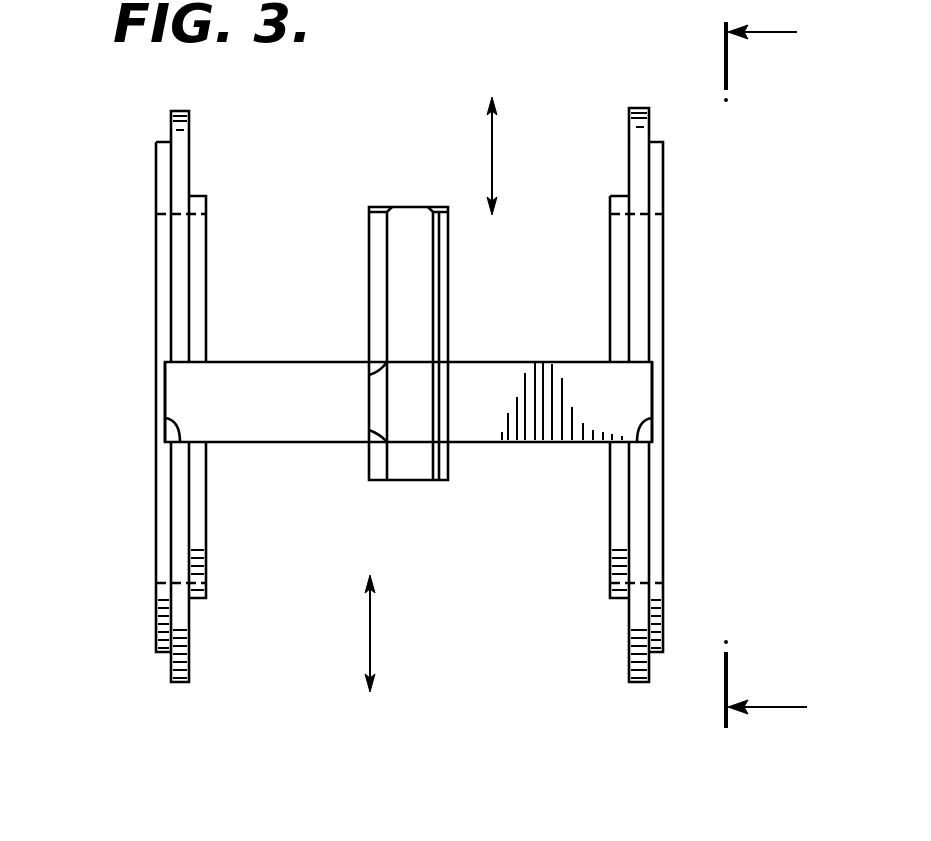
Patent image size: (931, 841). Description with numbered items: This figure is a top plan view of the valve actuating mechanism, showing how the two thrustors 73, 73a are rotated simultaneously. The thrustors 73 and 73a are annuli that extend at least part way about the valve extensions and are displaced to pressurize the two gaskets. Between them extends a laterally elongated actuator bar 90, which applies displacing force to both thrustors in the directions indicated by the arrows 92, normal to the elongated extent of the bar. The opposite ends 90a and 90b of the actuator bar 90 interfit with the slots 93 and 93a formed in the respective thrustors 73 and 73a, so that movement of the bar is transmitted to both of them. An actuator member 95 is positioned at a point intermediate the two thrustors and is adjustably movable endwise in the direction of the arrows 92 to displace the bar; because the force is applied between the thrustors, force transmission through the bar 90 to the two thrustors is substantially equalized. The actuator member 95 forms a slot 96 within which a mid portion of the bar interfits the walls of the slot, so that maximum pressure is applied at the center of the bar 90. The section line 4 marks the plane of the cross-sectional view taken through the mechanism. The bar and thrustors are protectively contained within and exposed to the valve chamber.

The section line 4- 4 is at (745, 369).
The thrustor 73 is at (150, 533).
The thrustor 73a is at (668, 225).
The actuator bar 90 is at (290, 425).
The end of actuator bar 90a is at (165, 385).
The end of actuator bar 90b is at (643, 370).
The arrows 92 is at (493, 155).
The slot 93 is at (165, 417).
The slot 93a is at (650, 418).
The actuator member 95 is at (368, 255).
The slot 96 is at (365, 380).